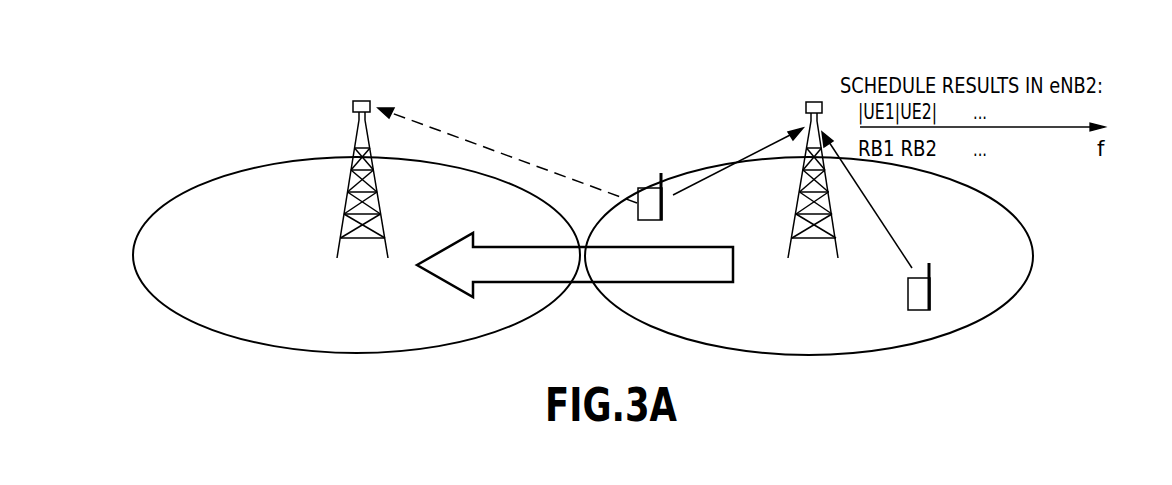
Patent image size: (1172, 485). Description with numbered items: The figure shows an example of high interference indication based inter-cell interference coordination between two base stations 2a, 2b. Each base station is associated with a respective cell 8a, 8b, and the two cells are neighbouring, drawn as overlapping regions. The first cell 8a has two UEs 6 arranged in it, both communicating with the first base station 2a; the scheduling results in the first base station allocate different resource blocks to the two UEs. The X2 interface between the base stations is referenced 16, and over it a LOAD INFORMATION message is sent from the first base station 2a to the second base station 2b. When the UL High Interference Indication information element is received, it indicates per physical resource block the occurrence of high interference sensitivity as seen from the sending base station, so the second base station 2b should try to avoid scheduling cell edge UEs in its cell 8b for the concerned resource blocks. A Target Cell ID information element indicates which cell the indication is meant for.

The first base station 2a is at (797, 214).
The second base station 2b is at (347, 193).
The UE 6 is at (638, 192).
The first cell 8a is at (1012, 302).
The second cell 8b is at (465, 343).
The X2 interface 16 is at (581, 282).